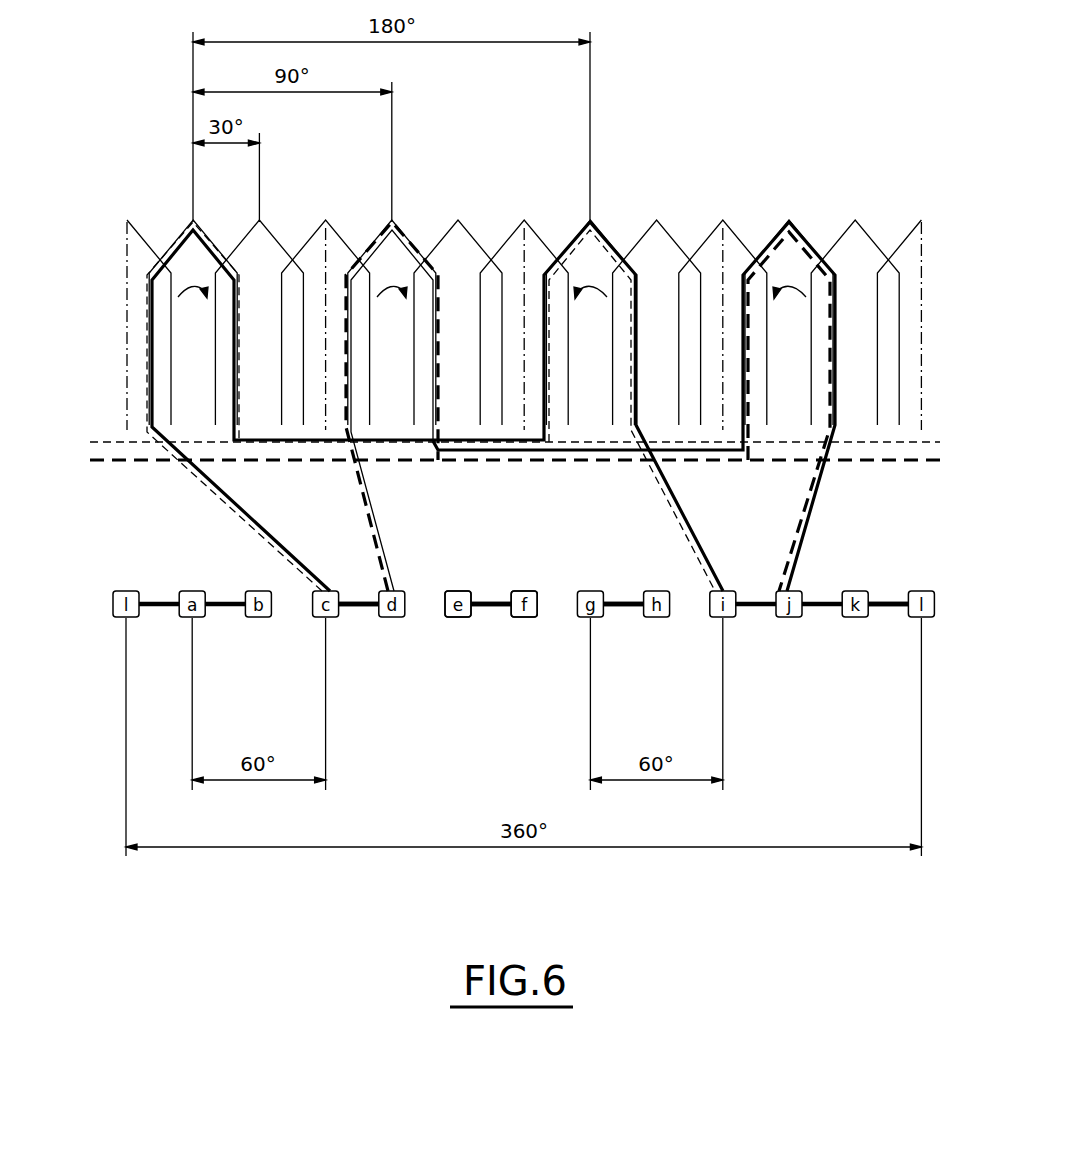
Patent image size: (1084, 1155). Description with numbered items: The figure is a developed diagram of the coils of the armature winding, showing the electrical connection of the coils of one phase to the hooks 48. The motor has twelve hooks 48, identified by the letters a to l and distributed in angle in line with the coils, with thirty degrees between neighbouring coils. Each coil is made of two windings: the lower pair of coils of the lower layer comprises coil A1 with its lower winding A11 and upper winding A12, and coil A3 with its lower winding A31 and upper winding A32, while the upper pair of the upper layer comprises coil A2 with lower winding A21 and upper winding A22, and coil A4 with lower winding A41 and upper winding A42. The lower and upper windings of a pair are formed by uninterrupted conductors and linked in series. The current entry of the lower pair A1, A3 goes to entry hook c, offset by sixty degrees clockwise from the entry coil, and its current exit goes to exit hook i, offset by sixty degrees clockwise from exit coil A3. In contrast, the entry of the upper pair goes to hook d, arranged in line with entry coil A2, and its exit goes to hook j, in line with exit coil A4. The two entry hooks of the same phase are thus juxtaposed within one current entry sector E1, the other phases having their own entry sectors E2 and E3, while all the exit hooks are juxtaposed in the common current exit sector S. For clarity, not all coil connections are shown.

The lower winding A11 is at (160, 262).
The upper winding A12 is at (186, 228).
The coil A2 is at (413, 351).
The lower winding A21 is at (375, 250).
The upper winding A22 is at (400, 226).
The coil A3 is at (557, 351).
The lower winding A31 is at (618, 252).
The upper winding A32 is at (602, 228).
The coil A4 is at (649, 352).
The lower winding A41 is at (768, 247).
The upper winding A42 is at (784, 229).
The current entry sector E1 is at (356, 607).
The current entry sector E2 is at (490, 602).
The current entry sector E3 is at (625, 602).
The current exit sector S is at (887, 602).
The hooks 48 is at (523, 618).